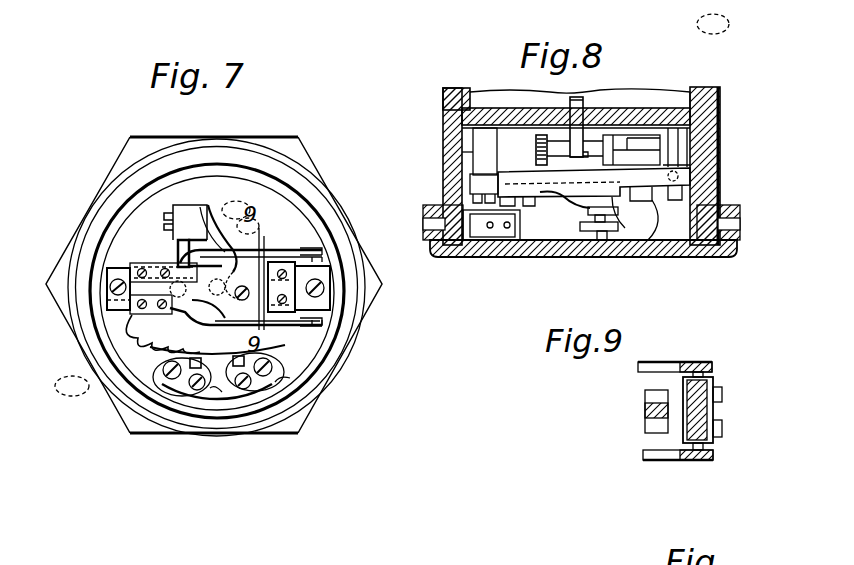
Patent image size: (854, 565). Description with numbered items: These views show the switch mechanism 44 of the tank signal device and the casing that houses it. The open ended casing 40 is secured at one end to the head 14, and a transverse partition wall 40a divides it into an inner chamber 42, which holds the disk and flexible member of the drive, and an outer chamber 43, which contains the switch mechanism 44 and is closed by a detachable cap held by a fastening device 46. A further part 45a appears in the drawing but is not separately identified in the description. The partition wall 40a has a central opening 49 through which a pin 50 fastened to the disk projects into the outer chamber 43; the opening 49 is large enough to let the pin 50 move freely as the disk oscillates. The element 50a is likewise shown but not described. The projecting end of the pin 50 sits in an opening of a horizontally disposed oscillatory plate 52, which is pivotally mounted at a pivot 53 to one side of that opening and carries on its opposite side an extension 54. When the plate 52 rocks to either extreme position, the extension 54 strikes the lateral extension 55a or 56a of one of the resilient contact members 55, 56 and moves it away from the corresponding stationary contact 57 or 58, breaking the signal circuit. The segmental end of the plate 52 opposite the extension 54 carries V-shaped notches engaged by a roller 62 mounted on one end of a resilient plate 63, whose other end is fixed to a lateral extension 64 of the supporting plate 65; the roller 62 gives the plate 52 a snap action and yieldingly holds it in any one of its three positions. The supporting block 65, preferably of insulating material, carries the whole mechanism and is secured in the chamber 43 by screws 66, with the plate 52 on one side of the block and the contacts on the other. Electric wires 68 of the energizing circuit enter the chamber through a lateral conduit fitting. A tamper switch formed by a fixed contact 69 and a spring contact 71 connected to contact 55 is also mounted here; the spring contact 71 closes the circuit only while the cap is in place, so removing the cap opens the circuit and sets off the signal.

In FIG. 7, the head 14 is at (127, 149).
In FIG. 7, the casing 40 is at (250, 414).
In FIG. 8, the casing 40 is at (722, 92).
In FIG. 8, the transverse partition wall 40a is at (447, 108).
In FIG. 8, the inner chamber 42 is at (478, 100).
In FIG. 8, the outer chamber 43 is at (455, 130).
In FIG. 8, the switch mechanism 44 is at (707, 158).
In FIG. 8, the post 45a is at (607, 240).
In FIG. 8, the fastening device 46 is at (433, 258).
In FIG. 8, the central opening 49 is at (610, 106).
In FIG. 8, the pin 50 is at (573, 98).
In FIG. 7, the pin head 50a is at (239, 210).
In FIG. 7, the oscillatory plate 52 is at (246, 280).
In FIG. 8, the oscillatory plate 52 is at (594, 186).
In FIG. 7, the pivot 53 is at (248, 226).
In FIG. 8, the pivot 53 is at (622, 107).
In FIG. 8, the extension 54 is at (658, 146).
In FIG. 9, the extension 54 is at (647, 408).
In FIG. 7, the resilient contact member 55 is at (307, 248).
In FIG. 8, the resilient contact member 55 is at (563, 205).
In FIG. 9, the resilient contact member 55 is at (693, 363).
In FIG. 9, the lateral extension 55a is at (638, 367).
In FIG. 7, the resilient contact member 56 is at (300, 318).
In FIG. 9, the resilient contact member 56 is at (700, 460).
In FIG. 9, the lateral extension 56a is at (643, 457).
In FIG. 7, the stationary contact member 57 is at (330, 260).
In FIG. 8, the stationary contact member 57 is at (645, 235).
In FIG. 9, the stationary contact member 57 is at (707, 378).
In FIG. 9, the stationary contact member 58 is at (708, 445).
In FIG. 7, the roller 62 is at (167, 288).
In FIG. 7, the resilient plate 63 is at (177, 246).
In FIG. 8, the resilient plate 63 is at (536, 147).
In FIG. 7, the lateral extension 64 is at (205, 209).
In FIG. 7, the supporting plate 65 is at (130, 300).
In FIG. 8, the supporting plate 65 is at (470, 181).
In FIG. 9, the supporting plate 65 is at (708, 410).
In FIG. 7, the screws 66 is at (116, 286).
In FIG. 8, the screws 66 is at (475, 152).
In FIG. 7, the electric wires 68 is at (257, 387).
In FIG. 7, the fixed contact 69 is at (178, 265).
In FIG. 8, the fixed contact 69 is at (635, 218).
In FIG. 8, the spring contact 71 is at (577, 227).